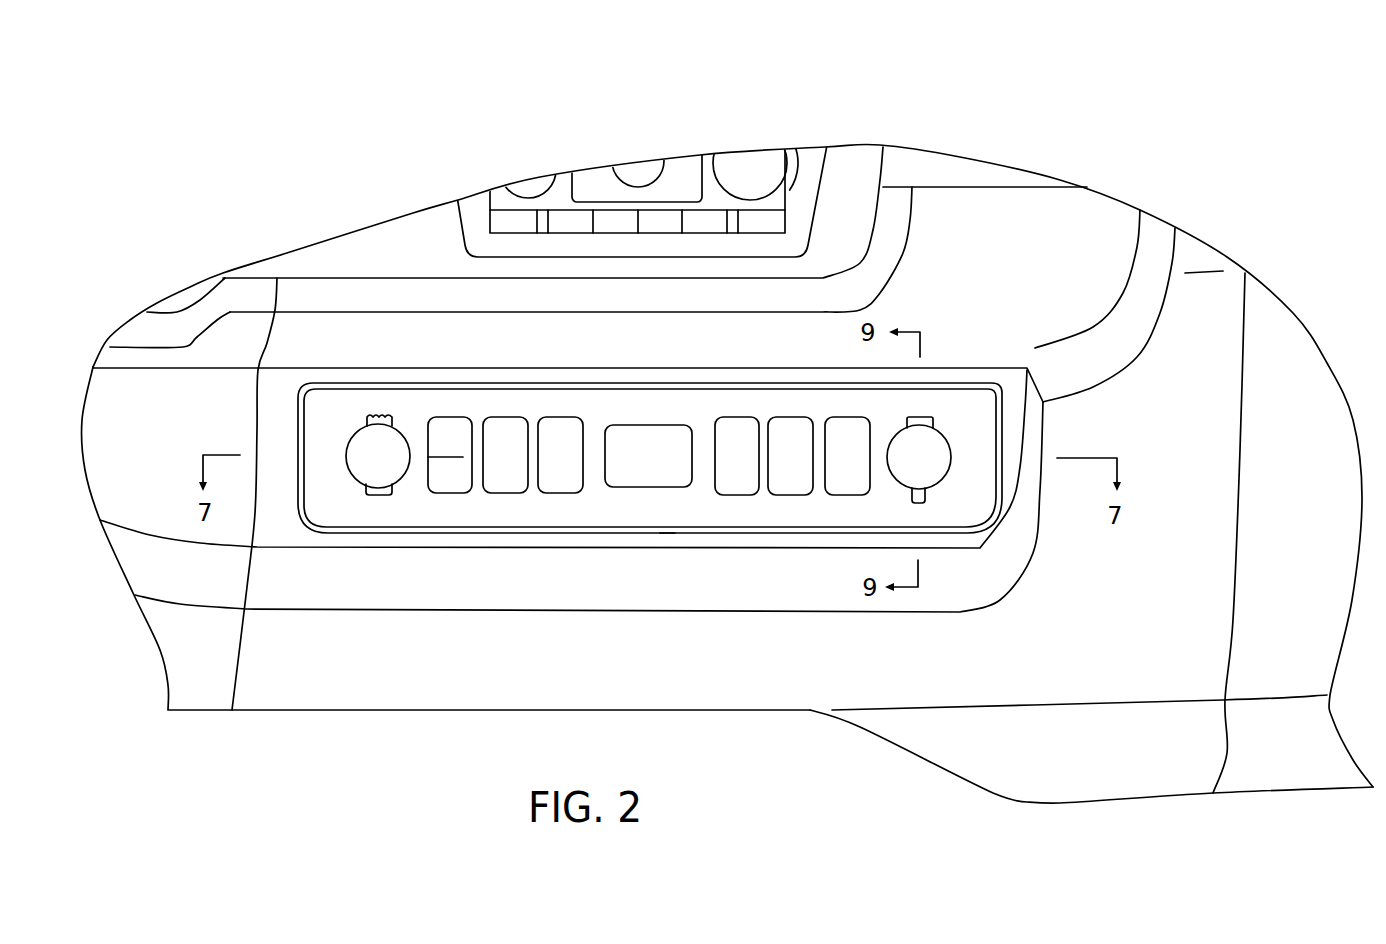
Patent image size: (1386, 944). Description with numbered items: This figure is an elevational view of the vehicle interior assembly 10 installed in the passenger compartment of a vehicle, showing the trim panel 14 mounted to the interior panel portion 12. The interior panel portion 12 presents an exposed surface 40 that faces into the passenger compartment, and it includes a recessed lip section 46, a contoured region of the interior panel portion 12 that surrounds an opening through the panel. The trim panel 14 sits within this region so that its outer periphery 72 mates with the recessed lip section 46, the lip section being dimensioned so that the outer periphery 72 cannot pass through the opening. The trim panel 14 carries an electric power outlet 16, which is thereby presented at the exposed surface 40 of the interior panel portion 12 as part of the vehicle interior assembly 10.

The vehicle interior assembly 10 is at (1093, 134).
The interior panel portion 12 is at (727, 672).
The trim panel 14 is at (650, 491).
The electric power outlet 16 is at (367, 457).
The exposed surface 40 is at (460, 585).
The recessed lip section 46 is at (667, 533).
The outer periphery 72 is at (557, 528).